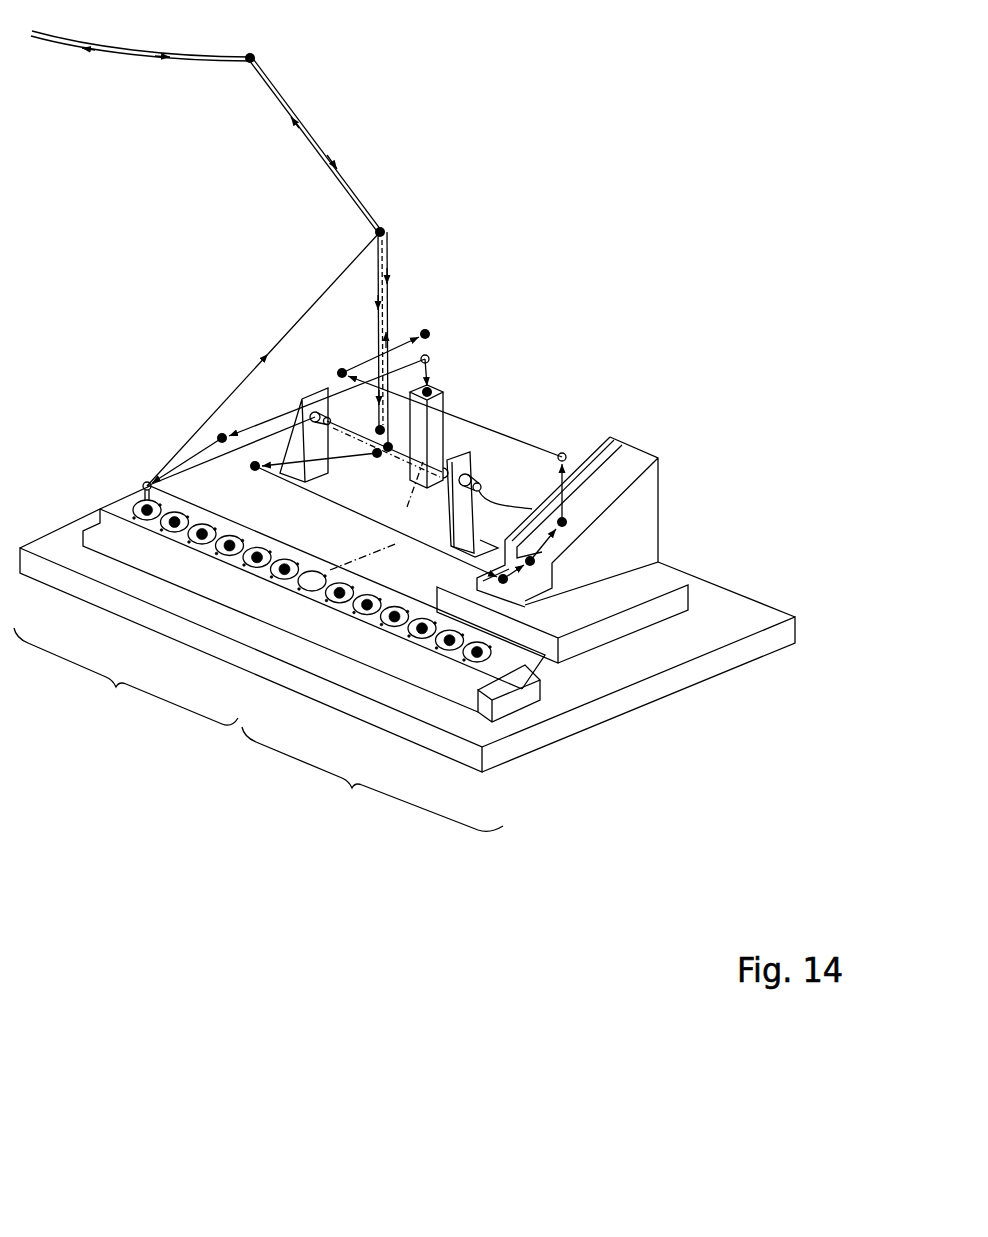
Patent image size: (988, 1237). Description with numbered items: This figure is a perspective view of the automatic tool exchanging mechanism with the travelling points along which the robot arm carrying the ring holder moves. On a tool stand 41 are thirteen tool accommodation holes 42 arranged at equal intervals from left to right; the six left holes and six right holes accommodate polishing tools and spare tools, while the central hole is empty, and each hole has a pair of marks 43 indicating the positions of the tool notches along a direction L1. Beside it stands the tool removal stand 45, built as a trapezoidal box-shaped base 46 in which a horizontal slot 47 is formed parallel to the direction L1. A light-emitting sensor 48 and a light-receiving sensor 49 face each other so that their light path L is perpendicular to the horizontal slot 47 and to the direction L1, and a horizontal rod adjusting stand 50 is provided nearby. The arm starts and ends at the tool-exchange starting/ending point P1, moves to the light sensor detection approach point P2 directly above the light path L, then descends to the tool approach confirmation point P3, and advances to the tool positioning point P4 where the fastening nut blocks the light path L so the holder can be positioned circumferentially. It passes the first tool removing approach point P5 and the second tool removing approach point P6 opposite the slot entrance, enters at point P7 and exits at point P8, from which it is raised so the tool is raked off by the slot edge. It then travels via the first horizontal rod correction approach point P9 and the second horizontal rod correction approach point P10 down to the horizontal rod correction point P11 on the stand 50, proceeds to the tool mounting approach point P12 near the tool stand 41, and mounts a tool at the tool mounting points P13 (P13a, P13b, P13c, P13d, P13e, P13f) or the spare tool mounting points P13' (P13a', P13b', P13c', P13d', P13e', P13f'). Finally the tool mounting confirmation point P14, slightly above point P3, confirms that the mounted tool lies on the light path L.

The tool stand 41 is at (509, 701).
The tool accommodation holes 42 is at (286, 638).
The marks 43 is at (493, 647).
The tool removal stand 45 is at (614, 527).
The trapezoidal box-shaped base 46 is at (562, 527).
The horizontal slot 47 is at (614, 466).
The light-emitting sensor 48 is at (314, 412).
The light-receiving sensor 49 is at (479, 484).
The horizontal rod adjusting stand 50 is at (452, 404).
The tool-exchange starting/ending point P1 is at (259, 45).
The light sensor detection approach point P2 is at (393, 221).
The tool approach confirmation point P3 is at (402, 435).
The tool positioning point P4 is at (383, 466).
The first tool removing approach point P5 is at (256, 480).
The second tool removing approach point P6 is at (508, 591).
The horizontal slot entrance point P7 is at (540, 574).
The horizontal slot exit point P8 is at (577, 521).
The first horizontal rod correction approach point P9 is at (336, 361).
The second horizontal rod correction approach point P10 is at (438, 321).
The horizontal rod correction point P11 is at (448, 379).
The tool mounting approach point P12 is at (236, 424).
The tool mounting points P13 is at (126, 676).
The spare tool mounting points P13' is at (372, 779).
The tool mounting point P13a is at (94, 562).
The tool mounting point P13b is at (114, 581).
The tool mounting point P13c is at (154, 590).
The tool mounting point P13d is at (182, 609).
The tool mounting point P13e is at (221, 618).
The tool mounting point P13f is at (246, 636).
The spare tool mounting point P13a' is at (307, 653).
The spare tool mounting point P13b' is at (332, 671).
The spare tool mounting point P13c' is at (374, 685).
The spare tool mounting point P13d' is at (401, 702).
The spare tool mounting point P13e' is at (446, 713).
The spare tool mounting point P13f' is at (477, 732).
The tool mounting confirmation point P14 is at (362, 417).
The light path L is at (411, 494).
The direction determined by a pair of marks L1 is at (380, 550).